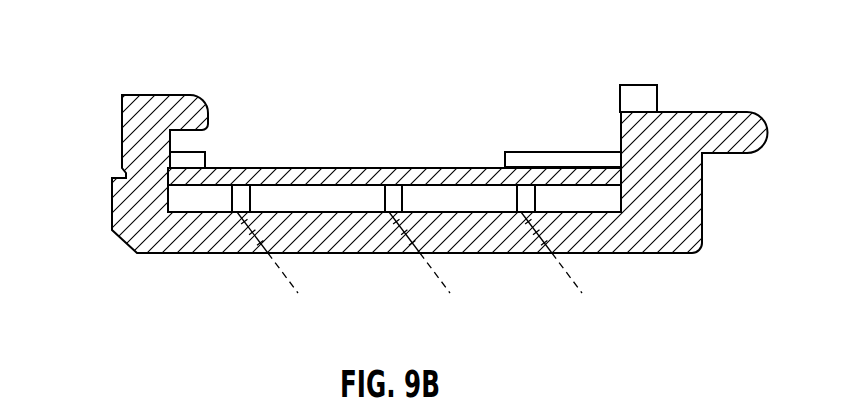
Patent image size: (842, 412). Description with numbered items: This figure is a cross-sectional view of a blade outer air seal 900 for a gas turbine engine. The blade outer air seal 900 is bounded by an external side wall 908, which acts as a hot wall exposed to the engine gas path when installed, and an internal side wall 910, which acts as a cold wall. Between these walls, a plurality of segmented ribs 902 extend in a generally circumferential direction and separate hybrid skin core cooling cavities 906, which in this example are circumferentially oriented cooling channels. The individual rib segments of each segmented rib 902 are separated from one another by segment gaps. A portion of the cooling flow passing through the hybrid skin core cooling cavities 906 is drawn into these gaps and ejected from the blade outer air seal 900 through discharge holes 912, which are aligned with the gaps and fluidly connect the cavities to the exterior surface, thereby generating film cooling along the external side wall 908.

The blade outer air seal 900 is at (117, 40).
The segmented rib 902 is at (392, 198).
The hybrid skin core cooling cavity 906 is at (273, 200).
The external side wall 908 is at (193, 260).
The internal side wall 910 is at (321, 162).
The discharge hole 912 is at (272, 221).